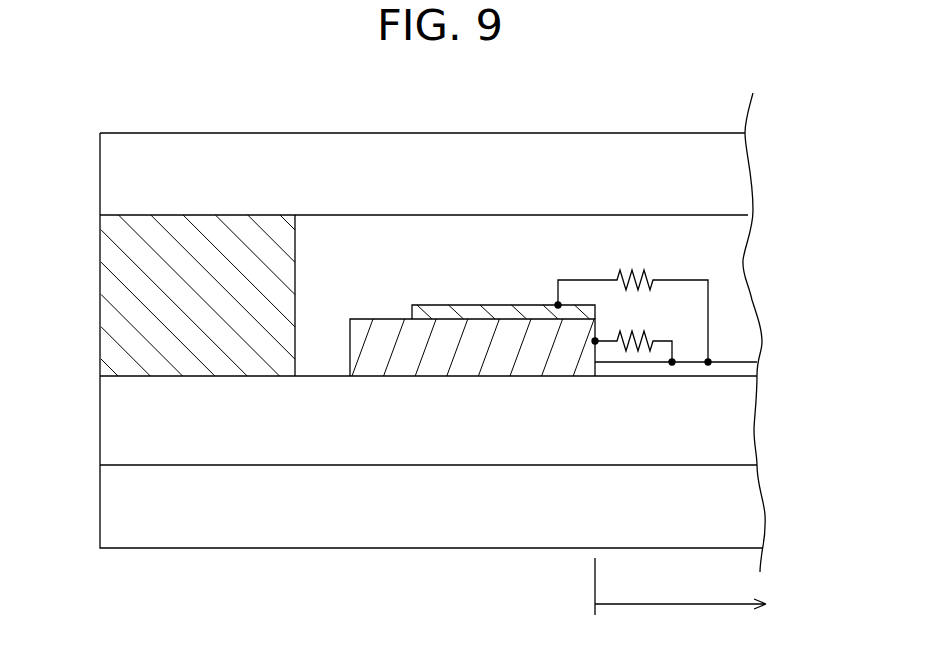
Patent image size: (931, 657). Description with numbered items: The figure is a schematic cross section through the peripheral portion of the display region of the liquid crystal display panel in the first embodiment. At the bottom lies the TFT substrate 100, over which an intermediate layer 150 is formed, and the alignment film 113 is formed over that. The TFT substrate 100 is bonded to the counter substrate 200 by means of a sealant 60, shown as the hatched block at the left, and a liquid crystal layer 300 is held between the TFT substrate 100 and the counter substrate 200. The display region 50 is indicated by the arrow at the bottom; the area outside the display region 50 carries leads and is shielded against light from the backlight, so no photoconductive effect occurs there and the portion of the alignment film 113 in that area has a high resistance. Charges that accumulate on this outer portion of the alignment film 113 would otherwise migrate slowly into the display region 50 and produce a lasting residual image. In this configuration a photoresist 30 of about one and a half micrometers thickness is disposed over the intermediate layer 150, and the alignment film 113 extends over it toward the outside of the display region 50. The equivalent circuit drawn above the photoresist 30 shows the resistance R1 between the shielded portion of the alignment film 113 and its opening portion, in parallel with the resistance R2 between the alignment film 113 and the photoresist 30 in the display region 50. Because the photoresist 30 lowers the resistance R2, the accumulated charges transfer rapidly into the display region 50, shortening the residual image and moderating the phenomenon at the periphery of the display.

The counter substrate 200 is at (737, 175).
The liquid crystal layer 300 is at (737, 260).
The alignment film 113 is at (482, 313).
The intermediate layer 150 is at (737, 424).
The TFT substrate 100 is at (737, 510).
The sealant 60 is at (117, 311).
The photoresist 30 is at (377, 326).
The display region 50 is at (680, 586).
The resistance R1 is at (633, 304).
The resistance R2 is at (633, 334).